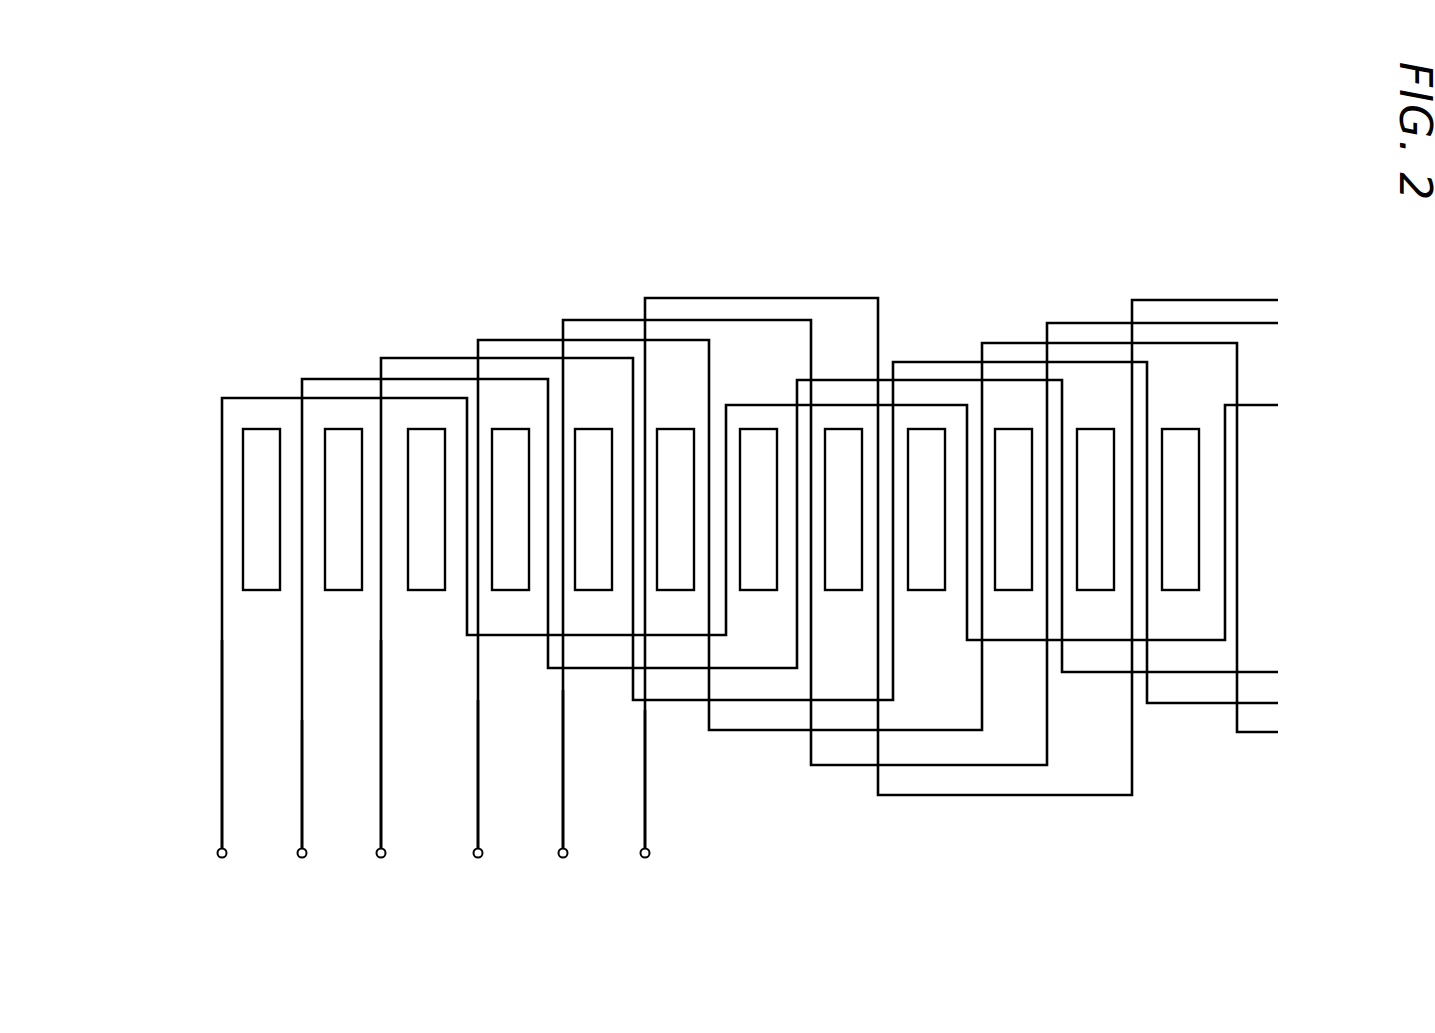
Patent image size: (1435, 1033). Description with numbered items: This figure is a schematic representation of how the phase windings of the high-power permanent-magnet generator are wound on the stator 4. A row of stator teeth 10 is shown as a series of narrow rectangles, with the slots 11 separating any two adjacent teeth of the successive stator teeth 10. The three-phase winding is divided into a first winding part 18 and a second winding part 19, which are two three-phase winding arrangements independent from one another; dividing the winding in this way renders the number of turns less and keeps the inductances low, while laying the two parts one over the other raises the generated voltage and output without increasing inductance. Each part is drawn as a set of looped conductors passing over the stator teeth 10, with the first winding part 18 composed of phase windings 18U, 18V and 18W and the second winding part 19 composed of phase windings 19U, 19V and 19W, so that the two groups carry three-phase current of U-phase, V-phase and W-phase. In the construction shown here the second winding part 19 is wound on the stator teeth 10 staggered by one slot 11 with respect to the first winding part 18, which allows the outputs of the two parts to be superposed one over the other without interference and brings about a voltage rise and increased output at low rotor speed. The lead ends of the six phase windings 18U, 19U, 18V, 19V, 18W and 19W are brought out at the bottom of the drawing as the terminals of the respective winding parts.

The stator 4 is at (1020, 295).
The stator teeth 10 is at (248, 520).
The slots 11 is at (457, 463).
The first winding part 18 is at (562, 698).
The second winding part 19 is at (302, 729).
The U-phase first winding part 18U is at (221, 776).
The U-phase second winding part 19U is at (300, 776).
The V-phase first winding part 18V is at (380, 776).
The V-phase second winding part 19V is at (477, 776).
The W-phase first winding part 18W is at (562, 776).
The W-phase second winding part 19W is at (644, 776).